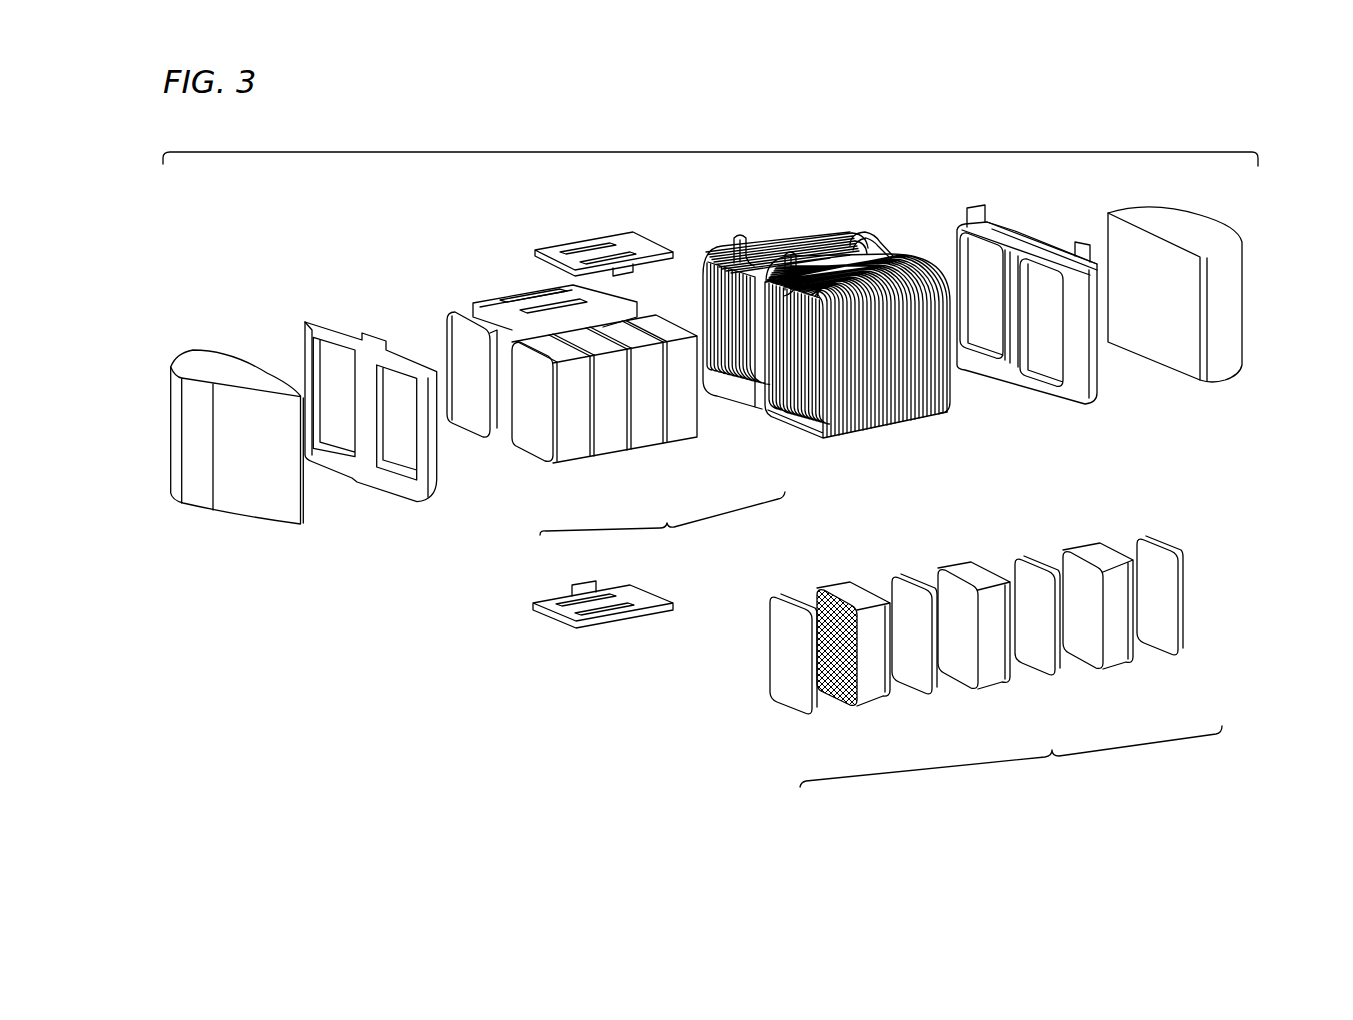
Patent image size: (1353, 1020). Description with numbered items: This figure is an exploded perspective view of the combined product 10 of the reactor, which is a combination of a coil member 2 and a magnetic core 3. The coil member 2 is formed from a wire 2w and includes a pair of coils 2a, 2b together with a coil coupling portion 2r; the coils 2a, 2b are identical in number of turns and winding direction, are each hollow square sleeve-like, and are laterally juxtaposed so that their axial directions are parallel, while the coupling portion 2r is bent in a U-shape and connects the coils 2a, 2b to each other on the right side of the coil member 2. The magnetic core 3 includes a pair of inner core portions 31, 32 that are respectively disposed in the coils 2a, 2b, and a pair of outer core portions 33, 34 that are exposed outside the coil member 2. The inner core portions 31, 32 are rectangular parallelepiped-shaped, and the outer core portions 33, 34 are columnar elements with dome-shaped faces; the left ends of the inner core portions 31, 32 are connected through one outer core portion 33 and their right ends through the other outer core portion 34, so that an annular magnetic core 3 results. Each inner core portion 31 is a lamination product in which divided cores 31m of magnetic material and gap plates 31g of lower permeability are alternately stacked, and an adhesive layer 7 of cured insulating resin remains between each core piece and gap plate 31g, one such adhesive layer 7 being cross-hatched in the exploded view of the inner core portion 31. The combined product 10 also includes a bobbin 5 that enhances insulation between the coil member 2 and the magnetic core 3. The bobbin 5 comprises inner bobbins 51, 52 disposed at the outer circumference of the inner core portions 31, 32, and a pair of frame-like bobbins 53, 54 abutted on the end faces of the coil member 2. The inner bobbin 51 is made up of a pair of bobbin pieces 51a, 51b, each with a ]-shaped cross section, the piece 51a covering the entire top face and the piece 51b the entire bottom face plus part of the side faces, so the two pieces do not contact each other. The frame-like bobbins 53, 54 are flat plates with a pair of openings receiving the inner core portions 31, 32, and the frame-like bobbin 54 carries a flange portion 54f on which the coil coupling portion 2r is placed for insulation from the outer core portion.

The combined product 10 is at (708, 150).
The coil member 2 is at (812, 342).
The coil 2a is at (847, 442).
The coil 2b is at (797, 242).
The coil coupling portion 2r is at (892, 254).
The wire 2w is at (737, 243).
The magnetic core 3 is at (1185, 480).
The inner core portion 31 is at (678, 560).
The gap plate 31g is at (815, 706).
The divided core 31m is at (868, 672).
The inner core portion 32 is at (458, 298).
The outer core portion 33 is at (197, 357).
The outer core portion 34 is at (1135, 213).
The bobbin 5 is at (1185, 503).
The inner bobbin 51 is at (610, 425).
The bobbin piece 51a is at (597, 238).
The bobbin piece 51b is at (622, 618).
The inner bobbin 52 is at (523, 292).
The frame-like bobbin 53 is at (305, 350).
The frame-like bobbin 54 is at (1066, 311).
The flange portion 54f is at (1026, 226).
The adhesive layer 7 is at (815, 590).